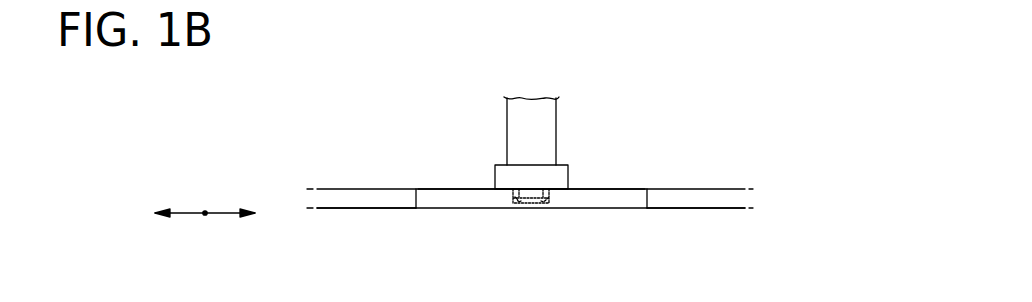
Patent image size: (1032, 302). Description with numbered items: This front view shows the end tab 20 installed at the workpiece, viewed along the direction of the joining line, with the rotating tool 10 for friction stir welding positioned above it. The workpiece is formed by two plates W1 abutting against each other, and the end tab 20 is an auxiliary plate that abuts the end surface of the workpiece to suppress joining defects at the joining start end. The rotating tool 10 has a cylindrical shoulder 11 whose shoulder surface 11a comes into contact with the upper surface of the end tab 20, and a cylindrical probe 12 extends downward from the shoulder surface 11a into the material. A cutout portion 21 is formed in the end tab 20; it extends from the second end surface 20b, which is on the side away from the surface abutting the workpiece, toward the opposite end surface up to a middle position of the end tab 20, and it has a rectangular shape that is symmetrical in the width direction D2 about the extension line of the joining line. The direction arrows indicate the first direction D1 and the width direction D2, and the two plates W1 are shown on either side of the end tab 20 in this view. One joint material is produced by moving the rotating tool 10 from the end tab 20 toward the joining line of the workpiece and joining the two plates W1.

The rotating tool 10 is at (657, 113).
The cylindrical shoulder 11 is at (557, 173).
The shoulder surface 11a is at (552, 196).
The cylindrical probe 12 is at (548, 198).
The end tab 20 is at (467, 202).
The second end surface 20b is at (445, 197).
The cutout portion 21 is at (530, 205).
The plates W1 is at (378, 200).
The first direction D1 is at (205, 213).
The width direction D2 is at (222, 217).